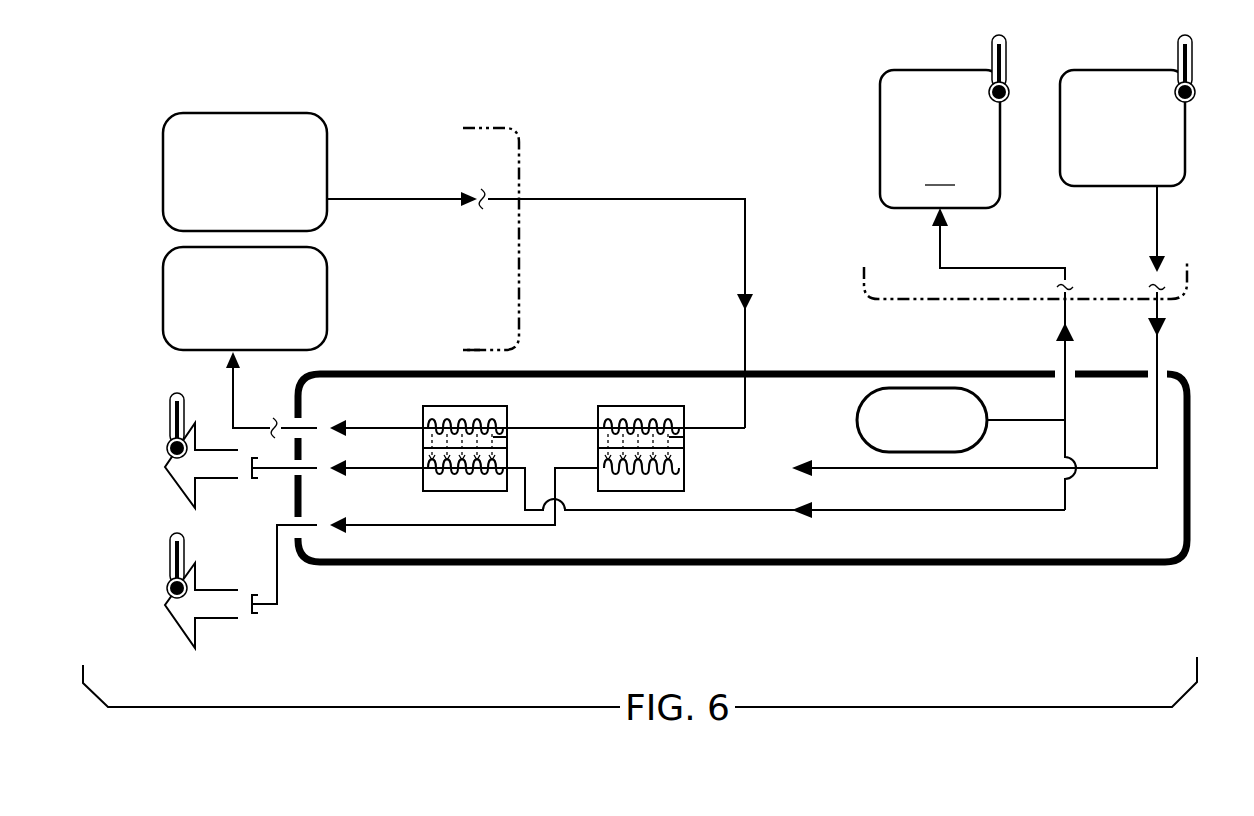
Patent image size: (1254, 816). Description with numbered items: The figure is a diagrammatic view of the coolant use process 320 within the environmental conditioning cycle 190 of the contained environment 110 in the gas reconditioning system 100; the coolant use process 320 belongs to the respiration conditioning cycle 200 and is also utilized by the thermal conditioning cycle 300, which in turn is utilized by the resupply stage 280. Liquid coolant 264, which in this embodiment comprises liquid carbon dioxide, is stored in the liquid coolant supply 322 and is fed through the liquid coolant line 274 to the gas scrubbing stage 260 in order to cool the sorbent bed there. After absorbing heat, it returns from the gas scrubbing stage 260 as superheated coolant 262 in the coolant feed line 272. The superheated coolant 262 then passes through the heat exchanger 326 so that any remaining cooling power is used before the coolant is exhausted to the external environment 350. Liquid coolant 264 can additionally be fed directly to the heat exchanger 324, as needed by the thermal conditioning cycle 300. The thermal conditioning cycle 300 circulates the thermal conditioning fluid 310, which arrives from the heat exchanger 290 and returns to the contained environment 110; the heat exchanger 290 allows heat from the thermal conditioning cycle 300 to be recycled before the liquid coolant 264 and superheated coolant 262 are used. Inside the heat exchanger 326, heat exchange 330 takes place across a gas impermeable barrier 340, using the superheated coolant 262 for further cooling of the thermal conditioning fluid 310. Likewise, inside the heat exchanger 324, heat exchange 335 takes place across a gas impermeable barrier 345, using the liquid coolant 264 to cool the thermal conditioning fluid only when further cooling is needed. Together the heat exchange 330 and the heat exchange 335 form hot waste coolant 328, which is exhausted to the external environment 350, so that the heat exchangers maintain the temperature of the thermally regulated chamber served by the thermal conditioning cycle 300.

The gas reconditioning system 100 is at (590, 610).
The contained environment 110 is at (251, 339).
The environmental conditioning cycle 190 is at (452, 356).
The respiration conditioning cycle 200 is at (706, 610).
The gas scrubbing stage 260 is at (950, 299).
The superheated coolant 262 is at (1092, 186).
The liquid coolant 264 is at (912, 208).
The coolant feed line 272 is at (1110, 468).
The liquid coolant line 274 is at (1065, 396).
The resupply stage 280 is at (492, 128).
The heat exchanger 290 is at (265, 217).
The thermal conditioning cycle 300 is at (860, 620).
The thermal conditioning fluid 310 is at (257, 195).
The coolant use process 320 is at (465, 562).
The liquid coolant supply 322 is at (857, 408).
The heat exchanger 324 is at (442, 406).
The heat exchanger 326 is at (618, 406).
The hot waste coolant 328 is at (215, 478).
The heat exchange 330 is at (684, 437).
The heat exchange 335 is at (507, 437).
The gas impermeable barrier 340 is at (604, 445).
The gas impermeable barrier 345 is at (428, 445).
The external environment 350 is at (140, 523).